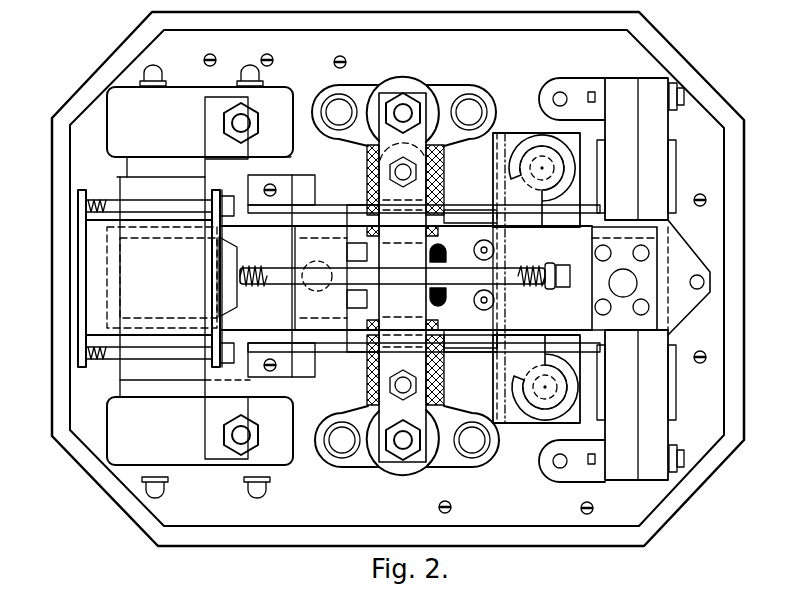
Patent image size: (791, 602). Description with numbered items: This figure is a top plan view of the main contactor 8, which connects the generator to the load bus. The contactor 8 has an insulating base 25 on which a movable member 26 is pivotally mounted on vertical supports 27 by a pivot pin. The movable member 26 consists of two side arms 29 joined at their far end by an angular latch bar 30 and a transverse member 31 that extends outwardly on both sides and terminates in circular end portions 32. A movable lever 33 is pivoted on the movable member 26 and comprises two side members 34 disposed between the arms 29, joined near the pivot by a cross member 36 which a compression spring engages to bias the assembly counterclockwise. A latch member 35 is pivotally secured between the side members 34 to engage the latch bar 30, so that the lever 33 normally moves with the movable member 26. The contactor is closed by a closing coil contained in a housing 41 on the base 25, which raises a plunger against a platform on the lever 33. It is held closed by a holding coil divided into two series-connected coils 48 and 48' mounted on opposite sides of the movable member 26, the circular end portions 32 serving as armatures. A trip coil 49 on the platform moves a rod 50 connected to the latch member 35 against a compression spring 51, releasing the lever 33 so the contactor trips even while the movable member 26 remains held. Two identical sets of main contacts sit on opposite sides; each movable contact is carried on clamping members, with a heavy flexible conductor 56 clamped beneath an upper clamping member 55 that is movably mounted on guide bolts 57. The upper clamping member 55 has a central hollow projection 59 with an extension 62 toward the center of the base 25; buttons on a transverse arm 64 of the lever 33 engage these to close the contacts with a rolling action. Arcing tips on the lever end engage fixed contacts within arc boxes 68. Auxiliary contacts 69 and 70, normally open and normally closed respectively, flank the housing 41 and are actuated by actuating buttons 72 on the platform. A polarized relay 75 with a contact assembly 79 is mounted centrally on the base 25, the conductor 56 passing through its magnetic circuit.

The main contactor 8 is at (709, 56).
The insulating base 25 is at (66, 385).
The auxiliary contact 70 is at (118, 120).
The auxiliary contact 69 is at (118, 418).
The housing 41 is at (122, 372).
The actuating buttons 72 is at (252, 115).
The trip coil 49 is at (96, 265).
The movable member 26 is at (452, 210).
The side arms 29 is at (322, 207).
The vertical supports 27 is at (285, 177).
The side members 34 is at (362, 222).
The cross member 36 is at (308, 306).
The polarized relay 75 is at (357, 250).
The compression spring 51 is at (257, 272).
The rod 50 is at (416, 272).
The transverse arm 64 is at (376, 368).
The flexible conductor 56 is at (443, 395).
The extension 62 is at (378, 398).
The contact assembly 79 is at (434, 316).
The angular latch bar 30 is at (470, 256).
The movable lever 33 is at (456, 345).
The central hollow projection 59 is at (438, 462).
The upper clamping member 55 is at (370, 462).
The guide bolts 57 is at (340, 450).
The holding coil 48' is at (536, 266).
The holding coil 48 is at (536, 388).
The circular end portions 32 is at (558, 172).
The transverse member 31 is at (498, 378).
The arc boxes 68 is at (660, 132).
The latch member 35 is at (560, 290).